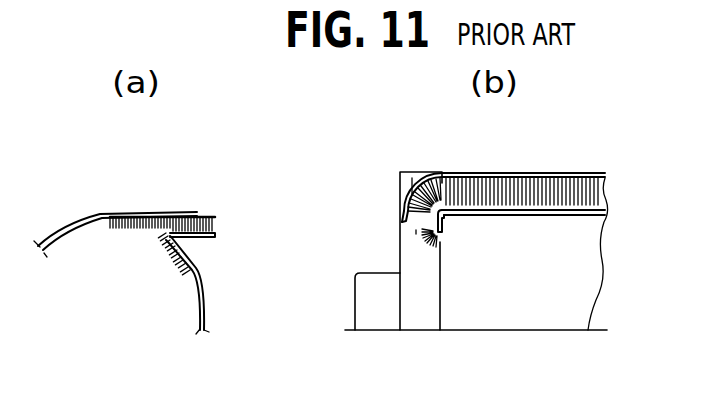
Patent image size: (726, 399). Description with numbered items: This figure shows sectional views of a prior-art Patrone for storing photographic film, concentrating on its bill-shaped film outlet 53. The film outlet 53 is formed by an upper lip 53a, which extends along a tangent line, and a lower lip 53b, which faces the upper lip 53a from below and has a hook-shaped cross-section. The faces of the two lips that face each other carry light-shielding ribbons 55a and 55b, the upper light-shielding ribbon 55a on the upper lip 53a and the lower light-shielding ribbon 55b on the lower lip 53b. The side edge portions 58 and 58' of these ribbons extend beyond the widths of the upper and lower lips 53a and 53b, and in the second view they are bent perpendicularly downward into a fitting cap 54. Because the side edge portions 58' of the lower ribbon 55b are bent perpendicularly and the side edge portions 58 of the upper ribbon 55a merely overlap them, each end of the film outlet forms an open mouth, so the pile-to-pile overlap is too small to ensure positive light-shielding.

The film outlet 53 is at (198, 209).
The upper lip 53a is at (160, 208).
The lower lip 53b is at (193, 243).
The upper light-shielding ribbon 55a is at (207, 215).
The lower light-shielding ribbon 55b is at (208, 237).
The fitting cap 54 is at (423, 312).
The side edge portion of upper light-shielding ribbon 58 is at (398, 159).
The side edge portion of lower light-shielding ribbon 58' is at (456, 258).